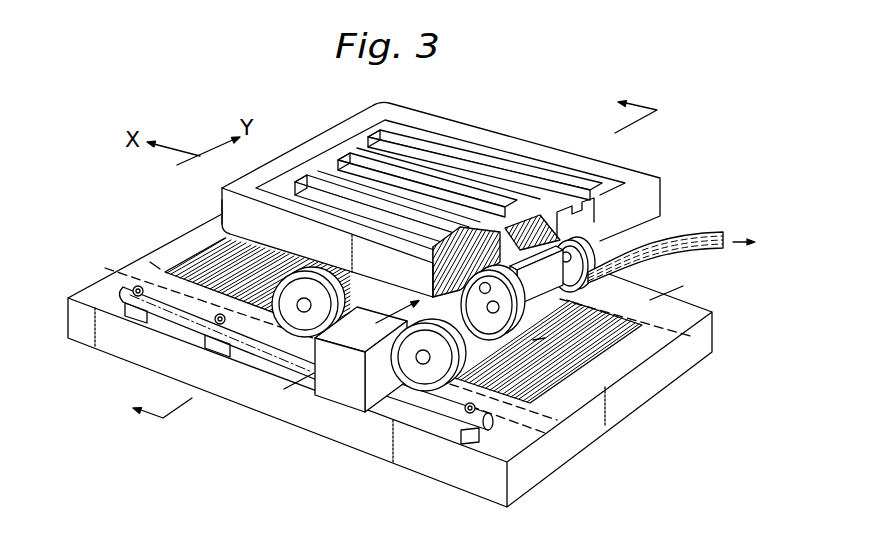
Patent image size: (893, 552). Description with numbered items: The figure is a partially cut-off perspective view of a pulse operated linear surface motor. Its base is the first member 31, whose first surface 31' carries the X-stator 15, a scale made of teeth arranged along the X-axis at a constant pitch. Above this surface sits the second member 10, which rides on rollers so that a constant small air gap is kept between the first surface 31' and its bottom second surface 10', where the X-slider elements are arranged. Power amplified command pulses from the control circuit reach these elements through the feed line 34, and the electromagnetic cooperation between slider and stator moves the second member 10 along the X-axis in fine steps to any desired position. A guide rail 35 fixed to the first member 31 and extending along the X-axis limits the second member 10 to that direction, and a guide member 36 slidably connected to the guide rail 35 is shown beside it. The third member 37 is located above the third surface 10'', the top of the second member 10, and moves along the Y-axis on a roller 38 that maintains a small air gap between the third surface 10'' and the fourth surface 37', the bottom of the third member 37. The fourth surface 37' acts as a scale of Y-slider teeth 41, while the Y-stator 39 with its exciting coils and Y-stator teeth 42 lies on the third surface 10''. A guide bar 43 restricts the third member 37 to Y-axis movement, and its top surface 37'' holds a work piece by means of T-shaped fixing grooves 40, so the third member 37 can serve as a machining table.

The second member 10 is at (340, 355).
The second surface 10' is at (673, 287).
The third surface 10'' is at (411, 280).
The X-stator 15 is at (540, 342).
The first member 31 is at (390, 360).
The first surface 31' is at (134, 235).
The feed line 34 is at (688, 236).
The guide rail 35 is at (450, 407).
The guide member 36 is at (337, 400).
The third member 37 is at (460, 199).
The fourth surface 37' is at (208, 205).
The top surface 37'' is at (442, 177).
The roller 38 is at (490, 328).
The Y-stator 39 is at (495, 230).
The T-shaped fixing grooves 40 is at (573, 205).
The Y-slider teeth 41 is at (460, 238).
The Y-stator teeth 42 is at (537, 213).
The guide bar 43 is at (509, 290).